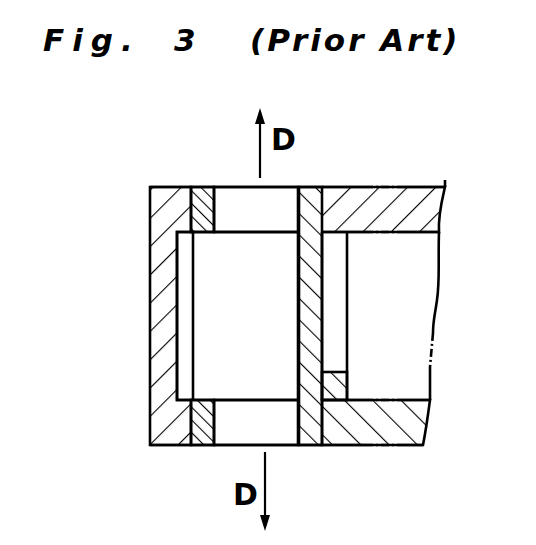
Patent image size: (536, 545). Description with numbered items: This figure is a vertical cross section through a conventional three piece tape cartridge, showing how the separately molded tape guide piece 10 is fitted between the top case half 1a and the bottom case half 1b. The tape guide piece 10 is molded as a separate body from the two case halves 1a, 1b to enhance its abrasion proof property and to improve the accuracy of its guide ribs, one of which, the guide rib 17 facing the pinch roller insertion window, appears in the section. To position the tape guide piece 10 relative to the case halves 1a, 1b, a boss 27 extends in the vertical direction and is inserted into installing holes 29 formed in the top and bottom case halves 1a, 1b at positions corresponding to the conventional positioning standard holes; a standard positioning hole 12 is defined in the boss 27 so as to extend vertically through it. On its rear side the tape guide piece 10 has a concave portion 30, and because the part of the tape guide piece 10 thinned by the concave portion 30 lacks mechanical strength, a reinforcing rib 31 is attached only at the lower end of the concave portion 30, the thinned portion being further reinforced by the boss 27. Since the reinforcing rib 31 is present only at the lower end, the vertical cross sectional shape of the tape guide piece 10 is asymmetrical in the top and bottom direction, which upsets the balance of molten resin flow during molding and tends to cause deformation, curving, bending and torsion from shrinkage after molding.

The top case half 1a is at (402, 187).
The bottom case half 1b is at (393, 445).
The tape guide piece 10 is at (308, 188).
The standard positioning hole 12 is at (243, 202).
The guide rib 17 is at (193, 345).
The boss 27 is at (200, 187).
The installing hole 29 is at (212, 212).
The concave portion 30 is at (323, 288).
The reinforcing rib 31 is at (330, 372).